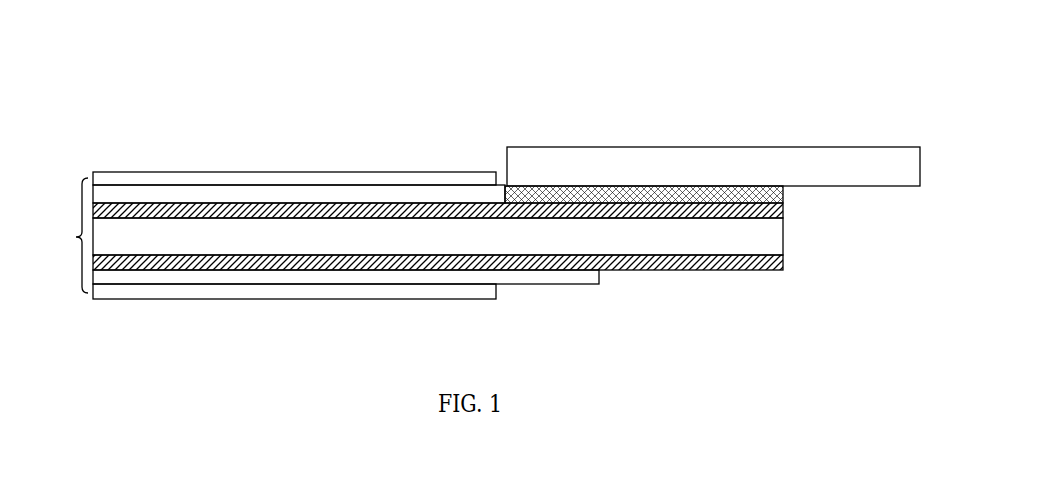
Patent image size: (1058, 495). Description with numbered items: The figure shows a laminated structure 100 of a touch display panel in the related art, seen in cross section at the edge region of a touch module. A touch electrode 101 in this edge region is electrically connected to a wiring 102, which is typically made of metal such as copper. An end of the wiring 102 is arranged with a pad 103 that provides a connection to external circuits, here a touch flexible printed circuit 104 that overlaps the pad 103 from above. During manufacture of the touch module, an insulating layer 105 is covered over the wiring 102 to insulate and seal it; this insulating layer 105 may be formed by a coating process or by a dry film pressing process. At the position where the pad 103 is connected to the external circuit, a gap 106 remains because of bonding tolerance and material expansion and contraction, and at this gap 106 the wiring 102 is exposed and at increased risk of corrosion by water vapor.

The laminated structure 100 is at (77, 237).
The touch electrode 101 is at (157, 203).
The wiring 102 is at (195, 195).
The pad 103 is at (592, 200).
The touch flexible printed circuit 104 is at (710, 168).
The insulating layer 105 is at (275, 178).
The gap 106 is at (500, 185).